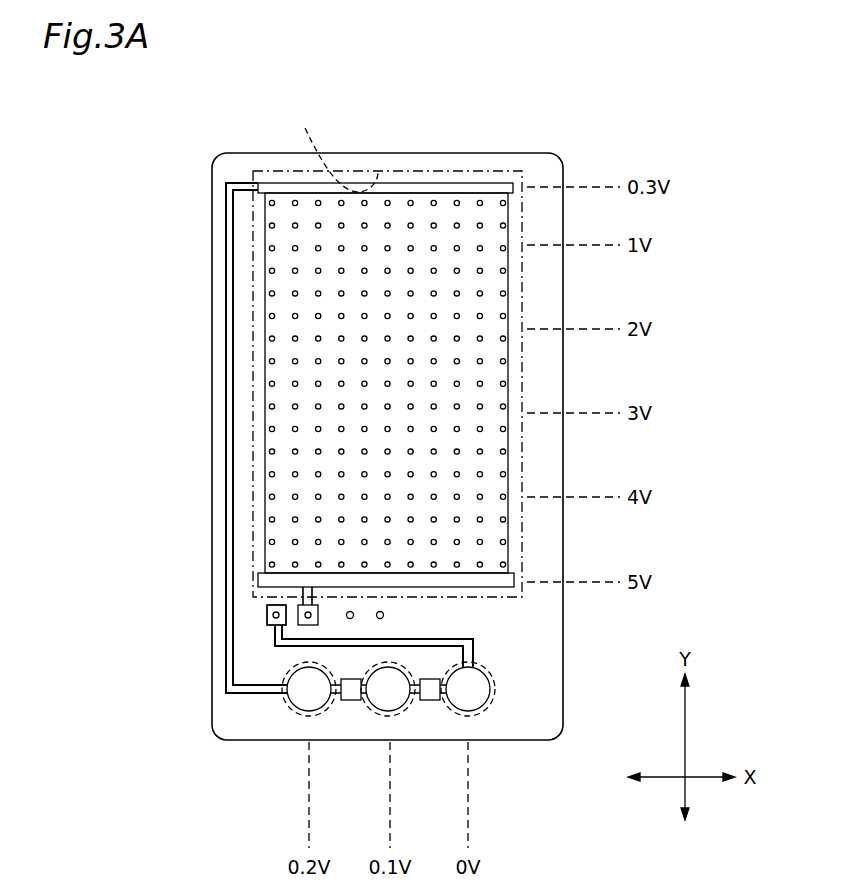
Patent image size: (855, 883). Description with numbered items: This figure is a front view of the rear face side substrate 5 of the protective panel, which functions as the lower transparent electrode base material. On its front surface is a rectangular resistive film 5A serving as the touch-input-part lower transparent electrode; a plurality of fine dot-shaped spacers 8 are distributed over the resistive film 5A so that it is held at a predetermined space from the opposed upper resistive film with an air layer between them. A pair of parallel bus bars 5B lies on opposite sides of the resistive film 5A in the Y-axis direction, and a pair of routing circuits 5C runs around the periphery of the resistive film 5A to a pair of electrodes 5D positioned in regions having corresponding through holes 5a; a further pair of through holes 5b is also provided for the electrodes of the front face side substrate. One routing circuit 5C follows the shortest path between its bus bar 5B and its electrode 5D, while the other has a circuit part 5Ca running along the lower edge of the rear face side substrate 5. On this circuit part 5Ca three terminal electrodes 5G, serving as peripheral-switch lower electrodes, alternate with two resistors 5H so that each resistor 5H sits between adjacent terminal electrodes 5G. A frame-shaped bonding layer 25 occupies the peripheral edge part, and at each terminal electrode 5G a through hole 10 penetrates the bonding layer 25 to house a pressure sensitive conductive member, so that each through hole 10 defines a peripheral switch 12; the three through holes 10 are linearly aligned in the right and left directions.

The rear face side substrate 5 is at (596, 151).
The resistive film 5A is at (388, 383).
The bus bars 5B is at (462, 188).
The routing circuits 5C is at (231, 323).
The circuit part 5Ca is at (246, 693).
The electrodes 5D is at (300, 628).
The terminal electrodes 5G is at (305, 700).
The resistors 5H is at (350, 700).
The through holes 5a is at (267, 612).
The through holes 5b is at (354, 617).
The dot-shaped spacers 8 is at (484, 249).
The through hole 10 is at (440, 650).
The peripheral switch 12 is at (394, 747).
The frame-shaped bonding layer 25 is at (332, 146).